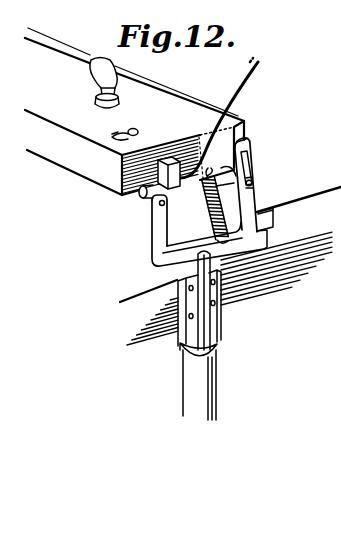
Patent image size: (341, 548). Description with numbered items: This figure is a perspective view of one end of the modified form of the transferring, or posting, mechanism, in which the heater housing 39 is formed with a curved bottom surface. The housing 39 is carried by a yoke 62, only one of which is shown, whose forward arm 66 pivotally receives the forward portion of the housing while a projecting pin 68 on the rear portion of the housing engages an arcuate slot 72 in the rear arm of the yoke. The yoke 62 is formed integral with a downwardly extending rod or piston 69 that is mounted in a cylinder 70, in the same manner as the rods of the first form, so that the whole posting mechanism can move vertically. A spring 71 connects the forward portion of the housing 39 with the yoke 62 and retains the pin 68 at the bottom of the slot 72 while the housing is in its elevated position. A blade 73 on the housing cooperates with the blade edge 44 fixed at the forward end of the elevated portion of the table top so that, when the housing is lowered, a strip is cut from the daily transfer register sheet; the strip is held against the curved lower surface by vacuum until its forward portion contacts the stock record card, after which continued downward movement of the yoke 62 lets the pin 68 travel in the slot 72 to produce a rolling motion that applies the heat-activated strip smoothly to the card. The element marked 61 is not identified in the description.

The heater housing 39 is at (166, 110).
The cable 61 is at (199, 117).
The yoke 62 is at (144, 256).
The forward arm 66 is at (152, 232).
The projecting pin 68 is at (253, 183).
The rod or piston 69 is at (205, 264).
The cylinder 70 is at (216, 372).
The spring 71 is at (262, 231).
The slot 72 is at (255, 151).
The blade 73 is at (248, 132).
The blade edge 44 is at (268, 208).